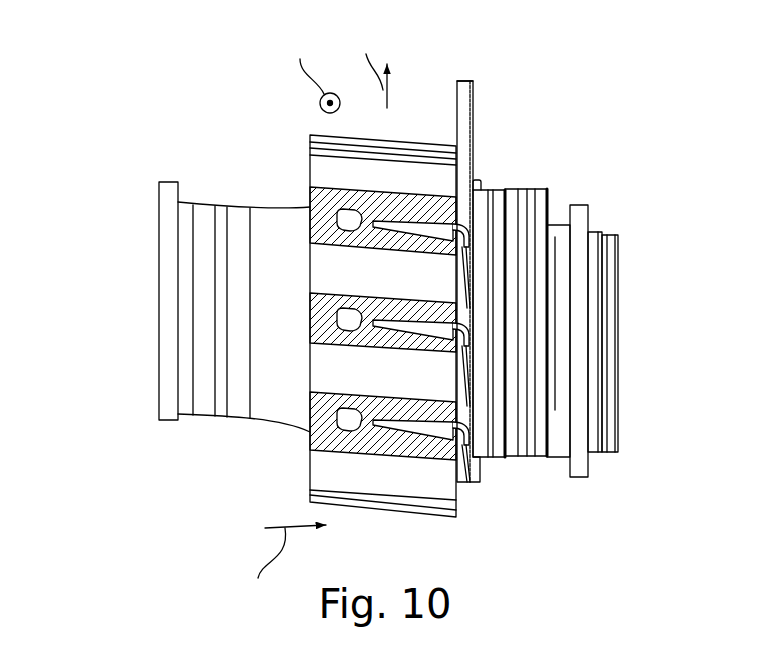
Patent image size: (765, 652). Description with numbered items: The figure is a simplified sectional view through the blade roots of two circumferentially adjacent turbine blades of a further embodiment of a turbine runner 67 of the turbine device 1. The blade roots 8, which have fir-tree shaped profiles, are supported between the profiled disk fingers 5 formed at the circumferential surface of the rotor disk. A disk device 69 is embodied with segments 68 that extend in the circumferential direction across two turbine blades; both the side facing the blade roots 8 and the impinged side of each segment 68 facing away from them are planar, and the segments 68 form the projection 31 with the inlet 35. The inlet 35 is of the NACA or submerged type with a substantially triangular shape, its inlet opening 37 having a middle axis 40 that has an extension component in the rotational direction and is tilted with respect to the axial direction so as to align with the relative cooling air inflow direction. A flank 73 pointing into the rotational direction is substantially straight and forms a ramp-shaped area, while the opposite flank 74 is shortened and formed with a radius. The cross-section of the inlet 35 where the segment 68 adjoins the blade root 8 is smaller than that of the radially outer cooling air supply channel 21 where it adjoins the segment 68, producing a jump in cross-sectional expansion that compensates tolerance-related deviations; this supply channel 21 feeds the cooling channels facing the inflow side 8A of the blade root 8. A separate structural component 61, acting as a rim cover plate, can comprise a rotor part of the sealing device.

The turbine device 1 is at (141, 126).
The turbine runner 67 is at (236, 170).
The disk fingers 5 is at (396, 172).
The blade root 8 is at (400, 207).
The inflow side of the blade root 8A is at (471, 242).
The radially outer cooling air supply channel 21 is at (461, 208).
The segment 68 is at (463, 112).
The disk device 69 is at (480, 78).
The inlet opening 37 is at (483, 455).
The middle axis 40 is at (537, 210).
The projection 31 is at (508, 350).
The flank 74 is at (473, 337).
The structural component 61 is at (552, 212).
The inlet 35 is at (476, 357).
The flank 73 is at (457, 383).